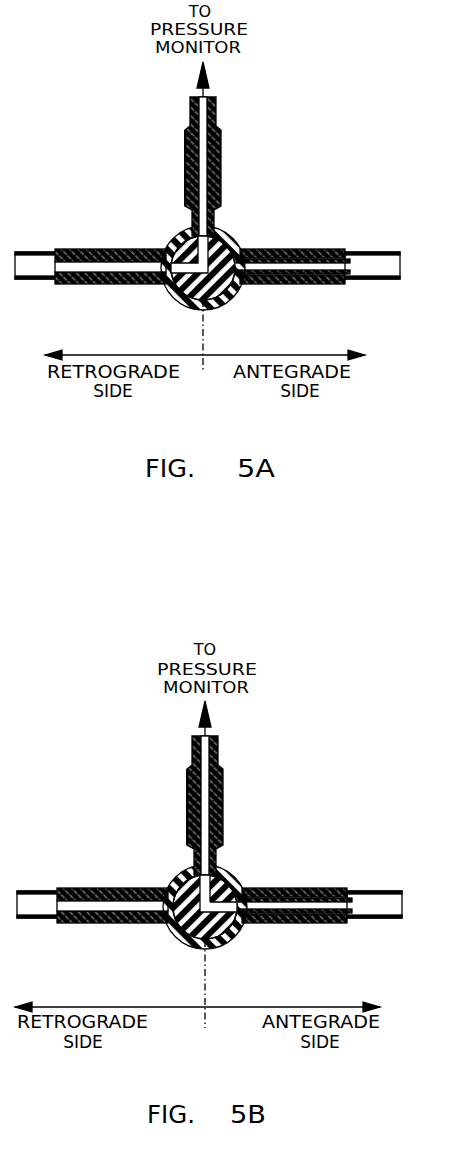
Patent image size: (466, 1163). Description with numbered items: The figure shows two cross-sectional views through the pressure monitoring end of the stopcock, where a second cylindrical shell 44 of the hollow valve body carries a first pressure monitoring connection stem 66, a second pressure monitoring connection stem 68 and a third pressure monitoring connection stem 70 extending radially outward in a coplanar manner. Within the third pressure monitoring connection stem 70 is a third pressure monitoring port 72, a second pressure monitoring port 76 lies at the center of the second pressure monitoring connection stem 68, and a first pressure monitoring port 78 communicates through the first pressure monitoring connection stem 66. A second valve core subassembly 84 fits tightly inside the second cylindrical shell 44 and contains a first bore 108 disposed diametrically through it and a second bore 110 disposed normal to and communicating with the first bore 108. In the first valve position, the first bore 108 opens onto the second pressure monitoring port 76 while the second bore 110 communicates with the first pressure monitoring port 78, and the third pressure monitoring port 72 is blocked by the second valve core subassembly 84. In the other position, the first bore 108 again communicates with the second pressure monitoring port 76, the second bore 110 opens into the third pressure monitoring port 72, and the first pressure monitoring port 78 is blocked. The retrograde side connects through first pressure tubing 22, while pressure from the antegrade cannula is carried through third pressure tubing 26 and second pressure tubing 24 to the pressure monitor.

In FIG. 5A, the first pressure tubing 22 is at (34, 270).
In FIG. 5B, the first pressure tubing 22 is at (52, 915).
In FIG. 5A, the second pressure tubing 24 is at (213, 126).
In FIG. 5B, the second pressure tubing 24 is at (215, 750).
In FIG. 5A, the third pressure tubing 26 is at (358, 262).
In FIG. 5B, the third pressure tubing 26 is at (383, 905).
In FIG. 5A, the second cylindrical shell 44 is at (252, 218).
In FIG. 5B, the second cylindrical shell 44 is at (260, 856).
In FIG. 5A, the first pressure monitoring connection stem 66 is at (95, 250).
In FIG. 5B, the first pressure monitoring connection stem 66 is at (91, 890).
In FIG. 5A, the second pressure monitoring connection stem 68 is at (187, 152).
In FIG. 5B, the second pressure monitoring connection stem 68 is at (188, 781).
In FIG. 5A, the third pressure monitoring connection stem 70 is at (271, 250).
In FIG. 5B, the third pressure monitoring connection stem 70 is at (262, 893).
In FIG. 5A, the third pressure monitoring port 72 is at (325, 262).
In FIG. 5B, the third pressure monitoring port 72 is at (330, 905).
In FIG. 5A, the second pressure monitoring port 76 is at (200, 184).
In FIG. 5B, the second pressure monitoring port 76 is at (207, 820).
In FIG. 5A, the first pressure monitoring port 78 is at (142, 266).
In FIG. 5B, the first pressure monitoring port 78 is at (147, 900).
In FIG. 5A, the second valve core subassembly 84 is at (185, 300).
In FIG. 5B, the second valve core subassembly 84 is at (222, 940).
In FIG. 5A, the first bore 108 is at (243, 282).
In FIG. 5B, the first bore 108 is at (178, 925).
In FIG. 5B, the second bore 110 is at (245, 922).